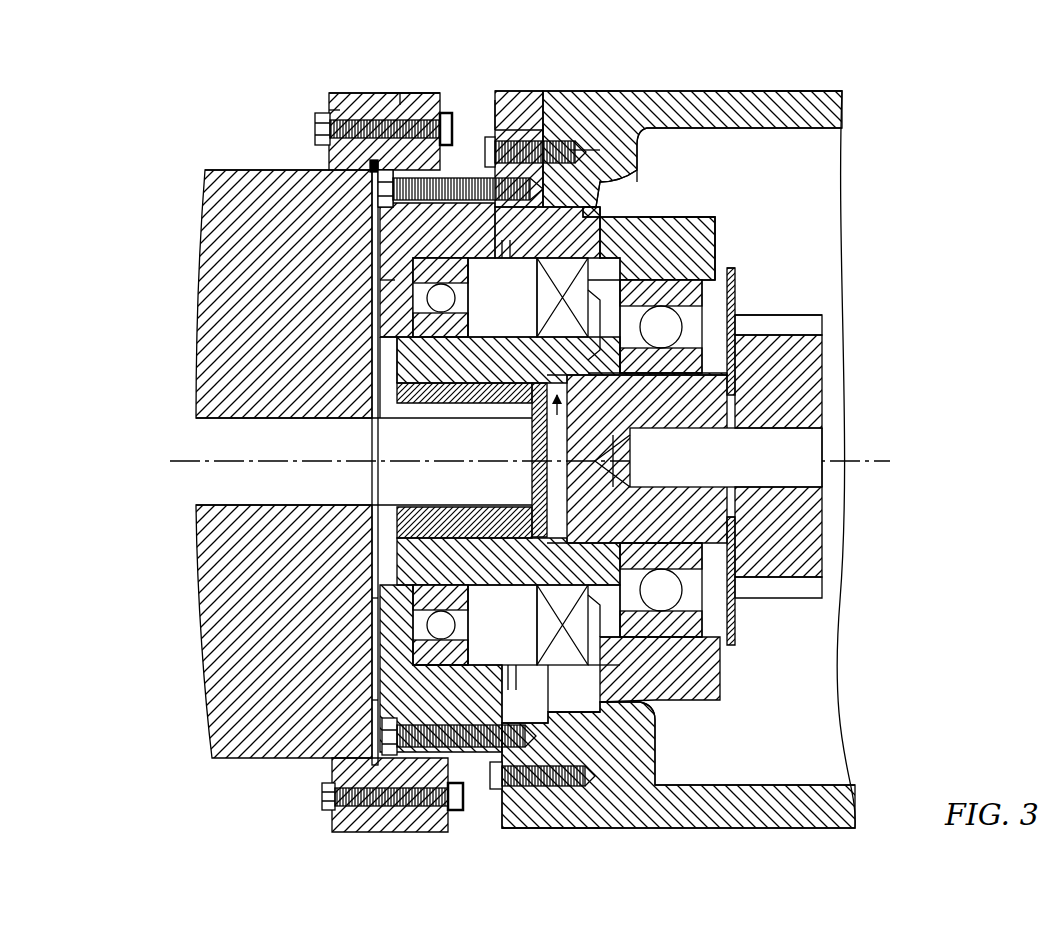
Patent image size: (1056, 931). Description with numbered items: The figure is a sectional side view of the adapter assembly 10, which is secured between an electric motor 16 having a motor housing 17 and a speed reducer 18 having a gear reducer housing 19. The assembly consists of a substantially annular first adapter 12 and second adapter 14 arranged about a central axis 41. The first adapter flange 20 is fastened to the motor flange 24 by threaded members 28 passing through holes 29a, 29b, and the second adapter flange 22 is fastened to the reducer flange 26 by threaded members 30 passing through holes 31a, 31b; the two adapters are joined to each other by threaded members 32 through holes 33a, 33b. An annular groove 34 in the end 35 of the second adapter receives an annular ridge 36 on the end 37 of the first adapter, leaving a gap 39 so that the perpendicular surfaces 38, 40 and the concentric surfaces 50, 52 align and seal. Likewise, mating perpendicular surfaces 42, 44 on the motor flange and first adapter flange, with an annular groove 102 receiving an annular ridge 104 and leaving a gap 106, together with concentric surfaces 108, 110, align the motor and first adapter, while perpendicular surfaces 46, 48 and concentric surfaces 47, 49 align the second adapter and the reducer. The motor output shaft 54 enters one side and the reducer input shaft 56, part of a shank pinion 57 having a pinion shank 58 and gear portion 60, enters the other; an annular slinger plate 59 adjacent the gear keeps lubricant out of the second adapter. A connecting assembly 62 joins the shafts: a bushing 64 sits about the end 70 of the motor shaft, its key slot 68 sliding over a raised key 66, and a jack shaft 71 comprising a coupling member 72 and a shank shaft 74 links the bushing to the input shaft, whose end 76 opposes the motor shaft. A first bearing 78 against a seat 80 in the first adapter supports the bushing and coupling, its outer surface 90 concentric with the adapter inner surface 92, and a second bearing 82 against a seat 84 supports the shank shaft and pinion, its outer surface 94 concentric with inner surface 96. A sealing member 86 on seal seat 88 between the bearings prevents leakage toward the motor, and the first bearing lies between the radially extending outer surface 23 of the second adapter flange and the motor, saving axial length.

The adapter assembly 10 is at (600, 70).
The first adapter 12 is at (430, 78).
The second adapter 14 is at (508, 78).
The electric motor 16 is at (200, 258).
The motor housing 17 is at (258, 168).
The speed reducer 18 is at (840, 115).
The gear reducer housing 19 is at (798, 90).
The first adapter flange 20 is at (388, 93).
The second adapter flange 22 is at (525, 91).
The radially extending outer surface 23 is at (495, 110).
The motor flange 24 is at (340, 93).
The reducer flange 26 is at (577, 93).
The threaded members 28 is at (318, 128).
The holes 29a is at (396, 106).
The holes 29b is at (338, 112).
The threaded members 30 is at (575, 140).
The holes 31a is at (519, 117).
The holes 31b is at (557, 117).
The threaded members 32 is at (482, 155).
The holes 33a is at (420, 178).
The holes 33b is at (570, 207).
The annular groove 34 is at (510, 250).
The end of second adapter 35 is at (520, 245).
The annular ridge 36 is at (504, 250).
The end of first adapter 37 is at (495, 226).
The surface of first adapter 38 is at (492, 725).
The gap 39 is at (512, 666).
The surface of second adapter 40 is at (492, 775).
The central axis 41 is at (185, 461).
The perpendicular surface 42 is at (395, 832).
The perpendicular surface 44 is at (345, 790).
The perpendicular surface 46 is at (545, 830).
The concentric surface 47 is at (625, 192).
The perpendicular surface 48 is at (560, 742).
The concentric surface 49 is at (617, 214).
The surface of first adapter 50 is at (520, 700).
The surface of second adapter 52 is at (512, 690).
The motor output shaft 54 is at (215, 440).
The reducer input shaft 56 is at (820, 402).
The shank pinion 57 is at (830, 372).
The pinion shank 58 is at (785, 436).
The annular slinger plate 59 is at (735, 287).
The gear portion 60 is at (825, 340).
The connecting assembly 62 is at (525, 595).
The bushing 64 is at (397, 517).
The raised key 66 is at (388, 405).
The key slot 68 is at (418, 406).
The end of motor output shaft 70 is at (545, 470).
The jack shaft 71 is at (530, 442).
The coupling member 72 is at (353, 391).
The shank shaft 74 is at (730, 495).
The end of input shaft 76 is at (572, 500).
The first bearing 78 is at (385, 290).
The seat 80 is at (428, 297).
The second bearing 82 is at (715, 240).
The seat 84 is at (731, 268).
The sealing member 86 is at (595, 660).
The seal seat 88 is at (600, 645).
The outer surface of first bearing 90 is at (425, 645).
The inner surface of first adapter 92 is at (412, 670).
The outer surface of second bearing 94 is at (645, 692).
The inner surface of second adapter 96 is at (732, 645).
The annular groove 102 is at (378, 598).
The annular ridge 104 is at (378, 670).
The gap 106 is at (372, 240).
The concentric surface 108 is at (378, 182).
The concentric surface 110 is at (372, 163).